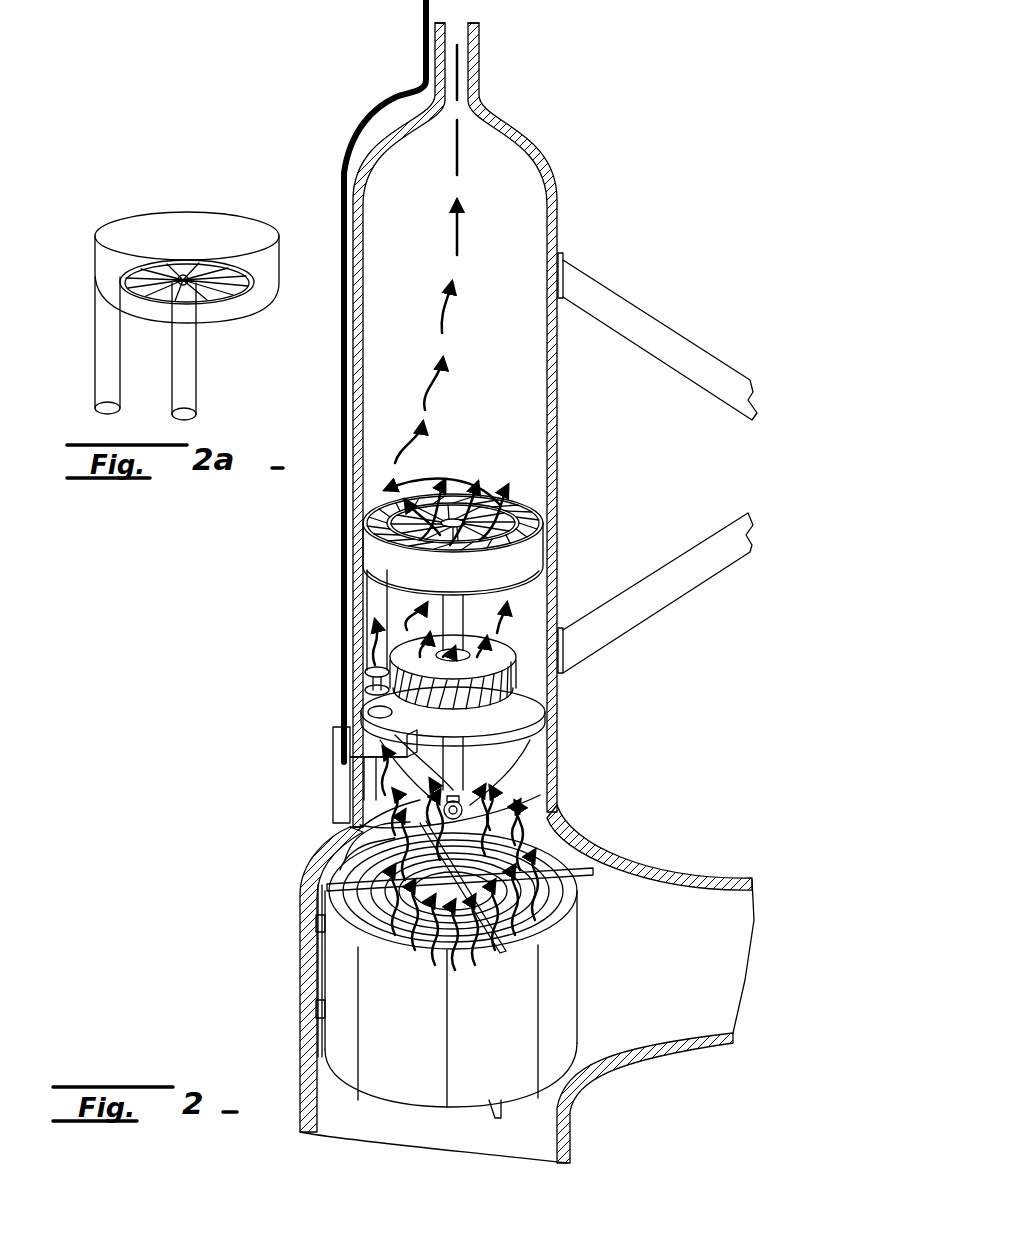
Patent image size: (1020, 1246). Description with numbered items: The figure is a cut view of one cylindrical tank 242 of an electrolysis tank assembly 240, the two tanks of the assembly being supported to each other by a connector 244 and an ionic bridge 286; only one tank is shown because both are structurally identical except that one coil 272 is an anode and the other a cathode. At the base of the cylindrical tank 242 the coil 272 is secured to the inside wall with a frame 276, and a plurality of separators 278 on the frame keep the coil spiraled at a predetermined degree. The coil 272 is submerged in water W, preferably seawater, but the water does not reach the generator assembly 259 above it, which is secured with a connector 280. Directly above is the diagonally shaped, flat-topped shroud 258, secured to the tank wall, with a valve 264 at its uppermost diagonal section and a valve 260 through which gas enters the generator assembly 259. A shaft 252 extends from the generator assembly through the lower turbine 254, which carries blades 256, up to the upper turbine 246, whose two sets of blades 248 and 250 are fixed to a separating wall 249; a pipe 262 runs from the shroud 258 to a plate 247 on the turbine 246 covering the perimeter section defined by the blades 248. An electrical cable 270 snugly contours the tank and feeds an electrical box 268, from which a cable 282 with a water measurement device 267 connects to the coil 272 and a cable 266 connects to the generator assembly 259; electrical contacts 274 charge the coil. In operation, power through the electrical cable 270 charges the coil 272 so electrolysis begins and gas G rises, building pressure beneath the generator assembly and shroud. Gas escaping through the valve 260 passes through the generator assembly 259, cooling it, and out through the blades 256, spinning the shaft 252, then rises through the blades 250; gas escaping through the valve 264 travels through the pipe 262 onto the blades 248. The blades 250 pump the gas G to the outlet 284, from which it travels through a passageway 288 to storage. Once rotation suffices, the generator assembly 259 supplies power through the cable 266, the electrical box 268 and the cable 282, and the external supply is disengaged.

In FIG. 2, the electrolysis tank assembly 240 is at (575, 130).
In FIG. 2, the cylindrical tank 242 is at (560, 215).
In FIG. 2, the connector 244 is at (688, 355).
In FIG. 2, the turbine 246 is at (504, 497).
In FIG. 2a, the turbine 246 is at (176, 241).
In FIG. 2a, the plate 247 is at (258, 271).
In FIG. 2, the blades 248 is at (545, 525).
In FIG. 2, the separating wall 249 is at (523, 510).
In FIG. 2, the blades 250 is at (472, 495).
In FIG. 2a, the blades 250 is at (230, 290).
In FIG. 2, the shaft 252 is at (458, 618).
In FIG. 2a, the shaft 252 is at (187, 359).
In FIG. 2, the turbine 254 is at (510, 658).
In FIG. 2, the blades 256 is at (497, 697).
In FIG. 2, the shroud 258 is at (538, 750).
In FIG. 2, the generator assembly 259 is at (540, 812).
In FIG. 2, the valve 260 is at (460, 797).
In FIG. 2, the pipe 262 is at (365, 590).
In FIG. 2a, the pipe 262 is at (102, 365).
In FIG. 2, the valve 264 is at (365, 672).
In FIG. 2, the cable 266 is at (375, 787).
In FIG. 2, the water measurement device 267 is at (350, 832).
In FIG. 2, the electrical box 268 is at (343, 778).
In FIG. 2, the electrical cable 270 is at (348, 690).
In FIG. 2, the coil 272 is at (518, 1027).
In FIG. 2, the electrical contacts 274 is at (320, 925).
In FIG. 2, the frame 276 is at (325, 878).
In FIG. 2, the separators 278 is at (327, 900).
In FIG. 2, the connector 280 is at (358, 830).
In FIG. 2, the cable 282 is at (345, 866).
In FIG. 2, the outlet 284 is at (464, 72).
In FIG. 2, the ionic bridge 286 is at (696, 871).
In FIG. 2, the passageway 288 is at (482, 40).
In FIG. 2, the gas G is at (457, 225).
In FIG. 2, the water W is at (688, 953).